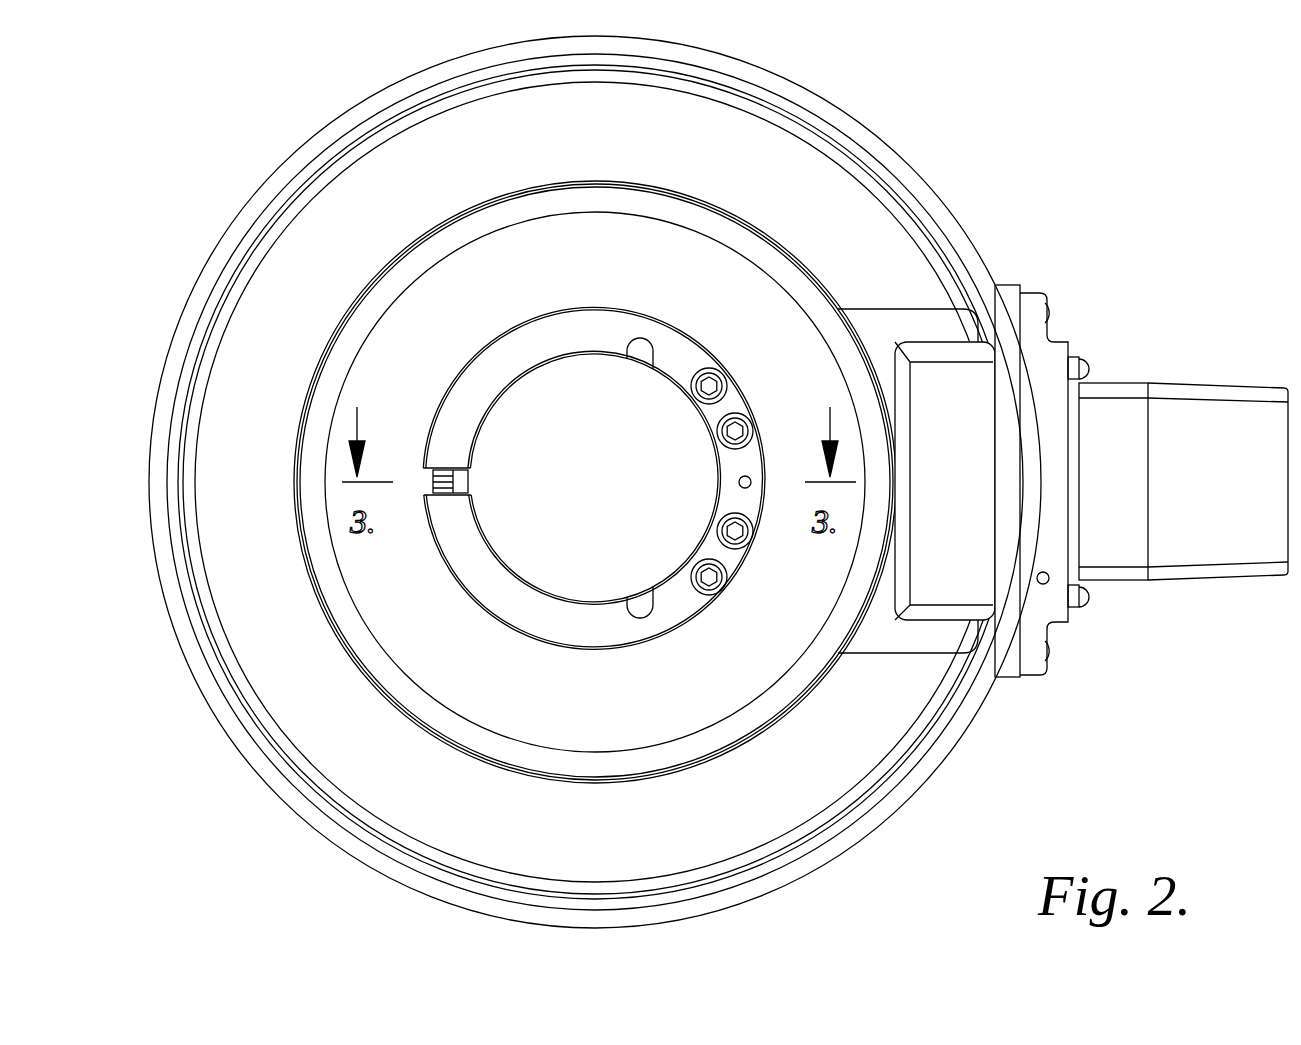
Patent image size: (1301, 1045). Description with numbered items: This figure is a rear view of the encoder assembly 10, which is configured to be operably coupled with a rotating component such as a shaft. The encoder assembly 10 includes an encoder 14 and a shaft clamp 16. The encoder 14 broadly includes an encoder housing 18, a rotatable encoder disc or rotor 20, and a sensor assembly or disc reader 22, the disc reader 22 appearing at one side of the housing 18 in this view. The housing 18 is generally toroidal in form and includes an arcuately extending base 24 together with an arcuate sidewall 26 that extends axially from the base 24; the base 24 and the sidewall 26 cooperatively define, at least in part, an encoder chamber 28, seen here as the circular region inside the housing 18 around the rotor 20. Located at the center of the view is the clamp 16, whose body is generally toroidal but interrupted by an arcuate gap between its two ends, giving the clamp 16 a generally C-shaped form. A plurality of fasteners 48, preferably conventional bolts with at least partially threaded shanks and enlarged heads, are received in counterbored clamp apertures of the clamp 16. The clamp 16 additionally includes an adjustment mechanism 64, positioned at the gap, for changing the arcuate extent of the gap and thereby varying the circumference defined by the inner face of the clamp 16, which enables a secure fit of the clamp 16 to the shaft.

The encoder assembly 10 is at (1033, 135).
The encoder 14 is at (788, 78).
The shaft clamp 16 is at (610, 305).
The encoder housing 18 is at (883, 142).
The encoder disc or rotor 20 is at (604, 200).
The sensor assembly or disc reader 22 is at (953, 588).
The base 24 is at (462, 145).
The sidewall 26 is at (338, 132).
The encoder chamber 28 is at (607, 708).
The fasteners 48 is at (715, 580).
The adjustment mechanism 64 is at (468, 484).